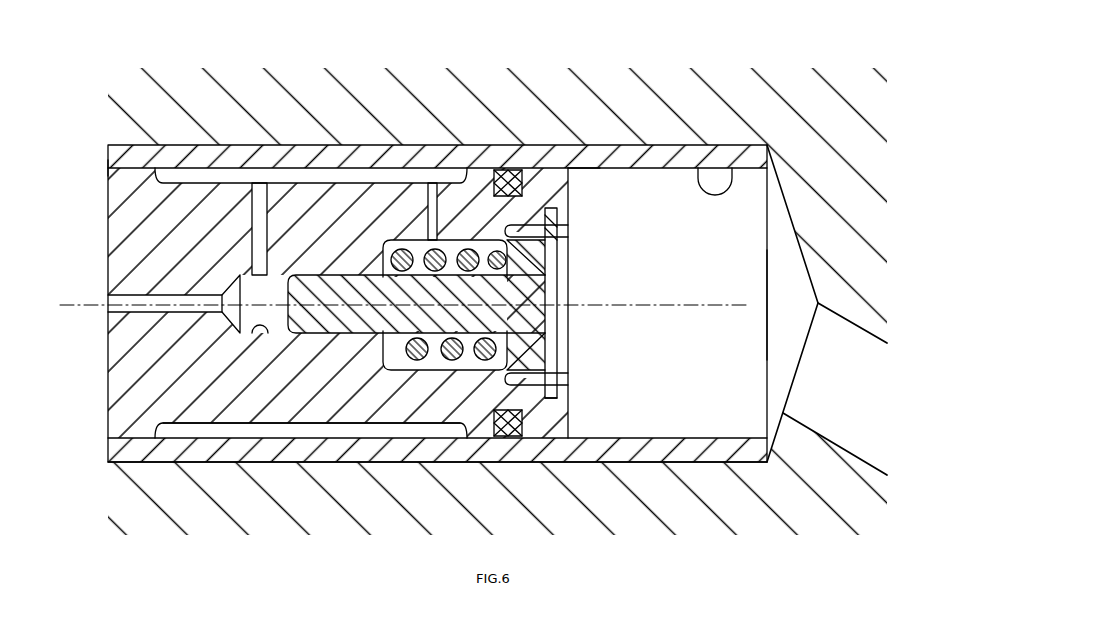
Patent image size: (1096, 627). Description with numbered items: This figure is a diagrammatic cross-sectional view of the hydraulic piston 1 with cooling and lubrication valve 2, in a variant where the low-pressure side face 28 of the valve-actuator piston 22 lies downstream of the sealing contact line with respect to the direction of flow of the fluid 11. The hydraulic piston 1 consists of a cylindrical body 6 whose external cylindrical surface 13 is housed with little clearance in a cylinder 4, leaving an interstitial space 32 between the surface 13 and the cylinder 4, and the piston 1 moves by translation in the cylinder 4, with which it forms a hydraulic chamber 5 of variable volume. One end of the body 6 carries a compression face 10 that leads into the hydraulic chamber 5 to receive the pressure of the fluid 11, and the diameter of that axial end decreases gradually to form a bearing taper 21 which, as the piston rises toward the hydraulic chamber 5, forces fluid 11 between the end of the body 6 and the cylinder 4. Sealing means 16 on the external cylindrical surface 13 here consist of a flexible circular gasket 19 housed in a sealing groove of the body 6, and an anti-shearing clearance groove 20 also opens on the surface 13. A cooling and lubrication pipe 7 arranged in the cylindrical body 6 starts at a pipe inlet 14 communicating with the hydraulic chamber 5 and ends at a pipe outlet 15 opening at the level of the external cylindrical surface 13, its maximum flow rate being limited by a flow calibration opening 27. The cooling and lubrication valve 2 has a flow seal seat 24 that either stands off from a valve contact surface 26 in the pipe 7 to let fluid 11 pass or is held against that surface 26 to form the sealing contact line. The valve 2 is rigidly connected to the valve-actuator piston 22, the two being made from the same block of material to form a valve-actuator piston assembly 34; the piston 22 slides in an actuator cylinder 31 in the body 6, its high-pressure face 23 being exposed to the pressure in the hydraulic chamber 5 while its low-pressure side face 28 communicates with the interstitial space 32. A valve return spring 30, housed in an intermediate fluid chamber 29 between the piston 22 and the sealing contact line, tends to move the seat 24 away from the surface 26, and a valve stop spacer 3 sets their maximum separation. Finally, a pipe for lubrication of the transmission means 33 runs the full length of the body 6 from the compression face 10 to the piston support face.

The hydraulic piston 1 is at (131, 213).
The cooling and lubrication valve 2 is at (525, 235).
The valve stop spacer 3 is at (572, 230).
The cylinder 4 is at (722, 190).
The hydraulic chamber 5 is at (725, 233).
The cylindrical body 6 is at (165, 220).
The cooling and lubrication pipe 7 is at (505, 375).
The compression face 10 is at (585, 410).
The fluid 11 is at (785, 205).
The external cylindrical surface 13 is at (127, 440).
The pipe inlet 14 is at (560, 344).
The pipe outlet 15 is at (432, 183).
The sealing means 16 is at (510, 237).
The flexible circular gasket 19 is at (510, 170).
The anti-shearing clearance groove 20 is at (187, 427).
The bearing taper 21 is at (568, 200).
The valve-actuator piston 22 is at (330, 317).
The high-pressure face 23 is at (560, 293).
The flow seal seat 24 is at (500, 163).
The valve contact surface 26 is at (504, 363).
The flow calibration opening 27 is at (397, 238).
The low-pressure side face 28 is at (276, 297).
The intermediate fluid chamber 29 is at (420, 216).
The valve return spring 30 is at (391, 262).
The actuator cylinder 31 is at (241, 340).
The interstitial space 32 is at (104, 168).
The pipe for lubrication of the transmission means 33 is at (136, 312).
The valve-actuator piston assembly 34 is at (442, 310).